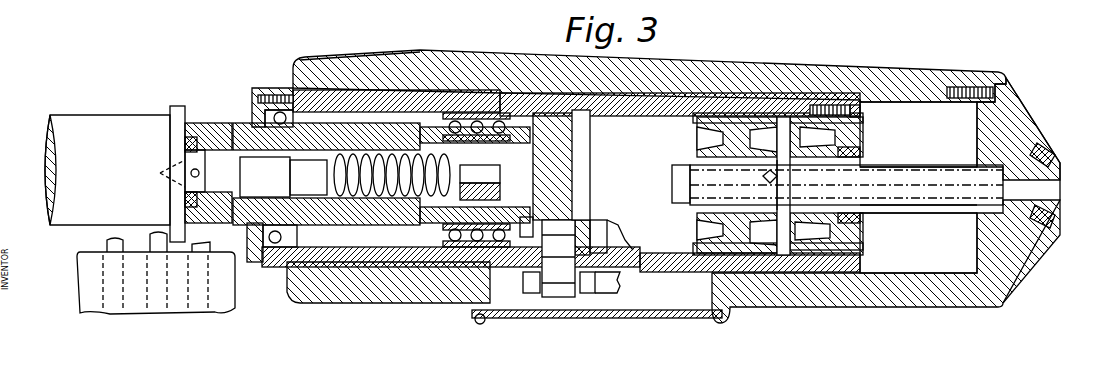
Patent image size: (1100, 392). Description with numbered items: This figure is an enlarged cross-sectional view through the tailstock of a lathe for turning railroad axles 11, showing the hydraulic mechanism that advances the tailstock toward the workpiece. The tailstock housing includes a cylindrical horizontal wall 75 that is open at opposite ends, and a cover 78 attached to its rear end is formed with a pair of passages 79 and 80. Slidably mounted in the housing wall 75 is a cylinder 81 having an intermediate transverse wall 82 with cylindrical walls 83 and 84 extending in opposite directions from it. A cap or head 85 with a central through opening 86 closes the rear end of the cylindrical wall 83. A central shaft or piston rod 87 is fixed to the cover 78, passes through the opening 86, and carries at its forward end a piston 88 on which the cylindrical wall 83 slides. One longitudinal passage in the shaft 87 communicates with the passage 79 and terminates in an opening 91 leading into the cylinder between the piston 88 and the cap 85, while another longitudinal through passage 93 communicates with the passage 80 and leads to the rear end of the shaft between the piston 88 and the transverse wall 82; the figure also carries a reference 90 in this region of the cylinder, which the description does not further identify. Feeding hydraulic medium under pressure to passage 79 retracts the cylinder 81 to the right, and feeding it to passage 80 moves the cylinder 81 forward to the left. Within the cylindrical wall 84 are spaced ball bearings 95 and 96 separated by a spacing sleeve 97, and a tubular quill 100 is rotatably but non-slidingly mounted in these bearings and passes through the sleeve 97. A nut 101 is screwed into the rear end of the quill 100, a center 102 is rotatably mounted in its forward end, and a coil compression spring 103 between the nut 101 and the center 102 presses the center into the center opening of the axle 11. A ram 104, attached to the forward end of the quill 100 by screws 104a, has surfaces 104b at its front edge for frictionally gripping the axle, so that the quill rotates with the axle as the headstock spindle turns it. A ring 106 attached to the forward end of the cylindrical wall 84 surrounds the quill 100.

The railroad axle 11 is at (77, 122).
The cylindrical horizontal wall 75 is at (823, 70).
The cover 78 is at (1023, 167).
The passage 79 is at (1050, 157).
The passage 80 is at (1043, 207).
The cylinder 81 is at (543, 110).
The transverse wall 82 is at (577, 168).
The cylindrical wall 83 is at (673, 100).
The cylindrical wall 84 is at (407, 90).
The cap or head 85 is at (857, 250).
The central through opening 86 is at (850, 188).
The shaft or piston rod 87 is at (937, 167).
The piston 88 is at (723, 137).
The cavity 90 is at (917, 170).
The opening 91 is at (785, 110).
The longitudinal through passage 93 is at (920, 205).
The ball bearing 95 is at (280, 87).
The ball bearing 96 is at (480, 113).
The spacing sleeve 97 is at (352, 123).
The quill 100 is at (245, 117).
The nut 101 is at (497, 200).
The center 102 is at (262, 183).
The coil compression spring 103 is at (369, 200).
The ram 104 is at (193, 118).
The screws 104a is at (212, 122).
The surfaces 104b is at (183, 145).
The ring 106 is at (258, 92).